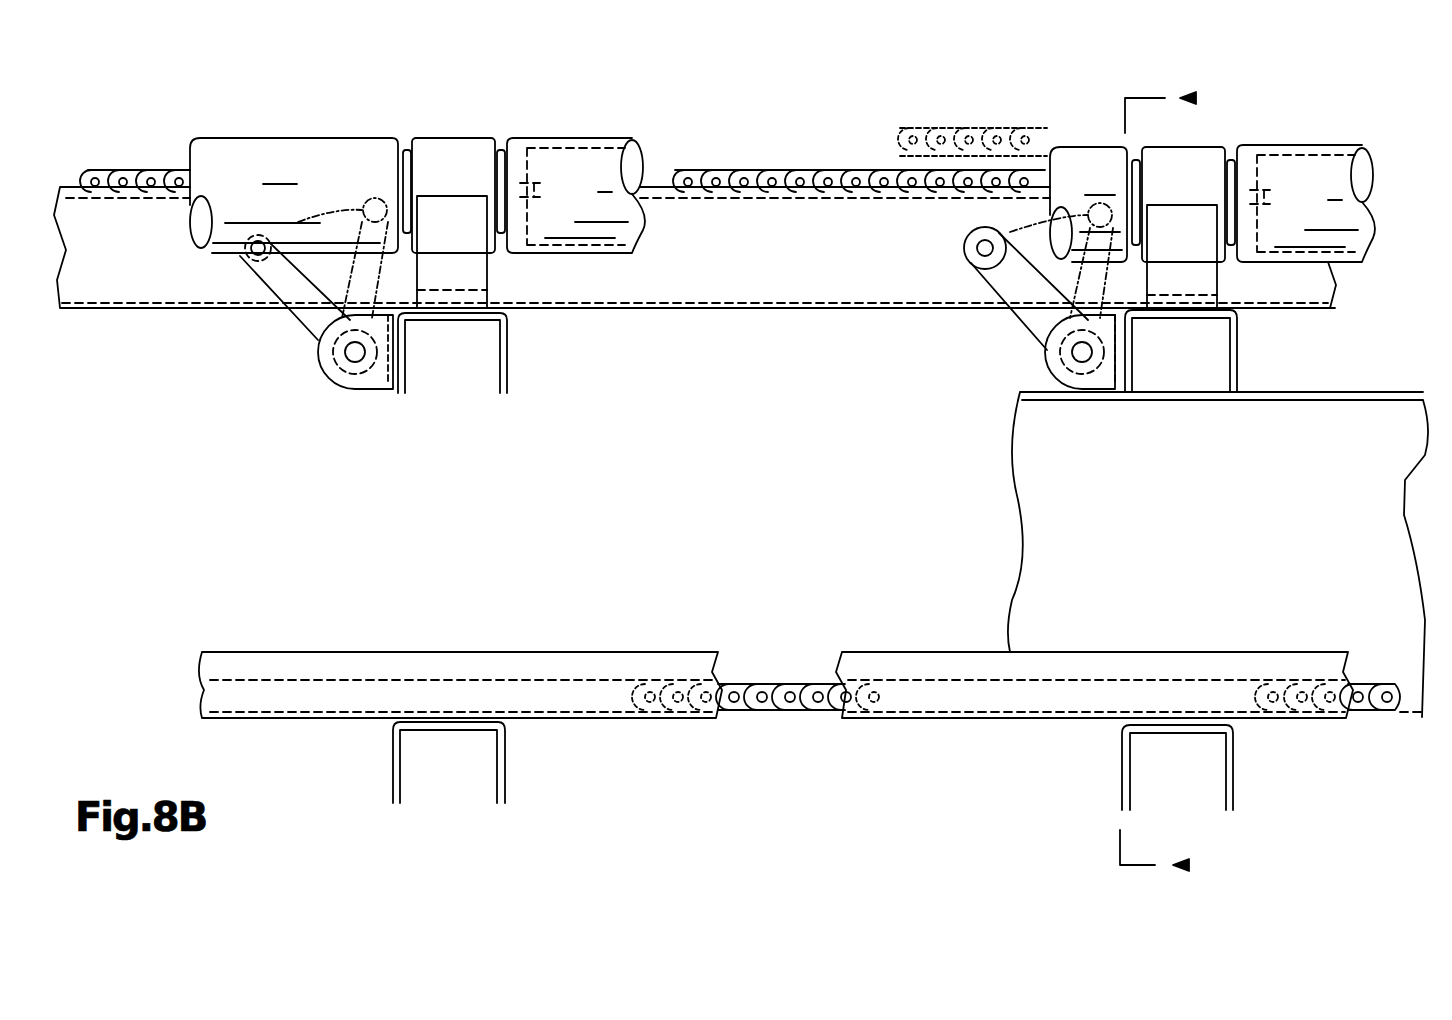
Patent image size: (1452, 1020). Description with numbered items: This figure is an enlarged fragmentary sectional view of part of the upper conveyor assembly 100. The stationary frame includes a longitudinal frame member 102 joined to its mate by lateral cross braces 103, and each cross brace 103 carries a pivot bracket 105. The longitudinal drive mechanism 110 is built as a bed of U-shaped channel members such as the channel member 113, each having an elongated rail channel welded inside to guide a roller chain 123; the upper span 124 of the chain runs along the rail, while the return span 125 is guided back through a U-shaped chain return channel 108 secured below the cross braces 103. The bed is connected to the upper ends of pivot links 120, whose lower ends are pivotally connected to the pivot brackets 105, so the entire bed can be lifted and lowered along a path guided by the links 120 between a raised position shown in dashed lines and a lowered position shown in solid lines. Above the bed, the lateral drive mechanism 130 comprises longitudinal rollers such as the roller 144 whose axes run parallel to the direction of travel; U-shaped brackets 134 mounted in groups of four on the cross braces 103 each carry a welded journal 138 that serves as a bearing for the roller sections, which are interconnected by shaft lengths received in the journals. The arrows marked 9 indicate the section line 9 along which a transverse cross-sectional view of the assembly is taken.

The upper conveyor assembly 100 is at (612, 76).
The longitudinal frame member 102 is at (1396, 463).
The cross brace 103 is at (508, 348).
The pivot bracket 105 is at (330, 378).
The chain return channel 108 is at (540, 652).
The longitudinal drive mechanism 110 is at (727, 160).
The channel member 113 is at (834, 312).
The pivot link 120 is at (297, 325).
The roller chain 123 is at (826, 160).
The upper span 124 is at (130, 150).
The return span 125 is at (752, 712).
The lateral drive mechanism 130 is at (545, 125).
The U-shaped bracket 134 is at (490, 265).
The journal 138 is at (437, 162).
The roller 144 is at (600, 138).
The section line 9- 9 is at (1159, 482).